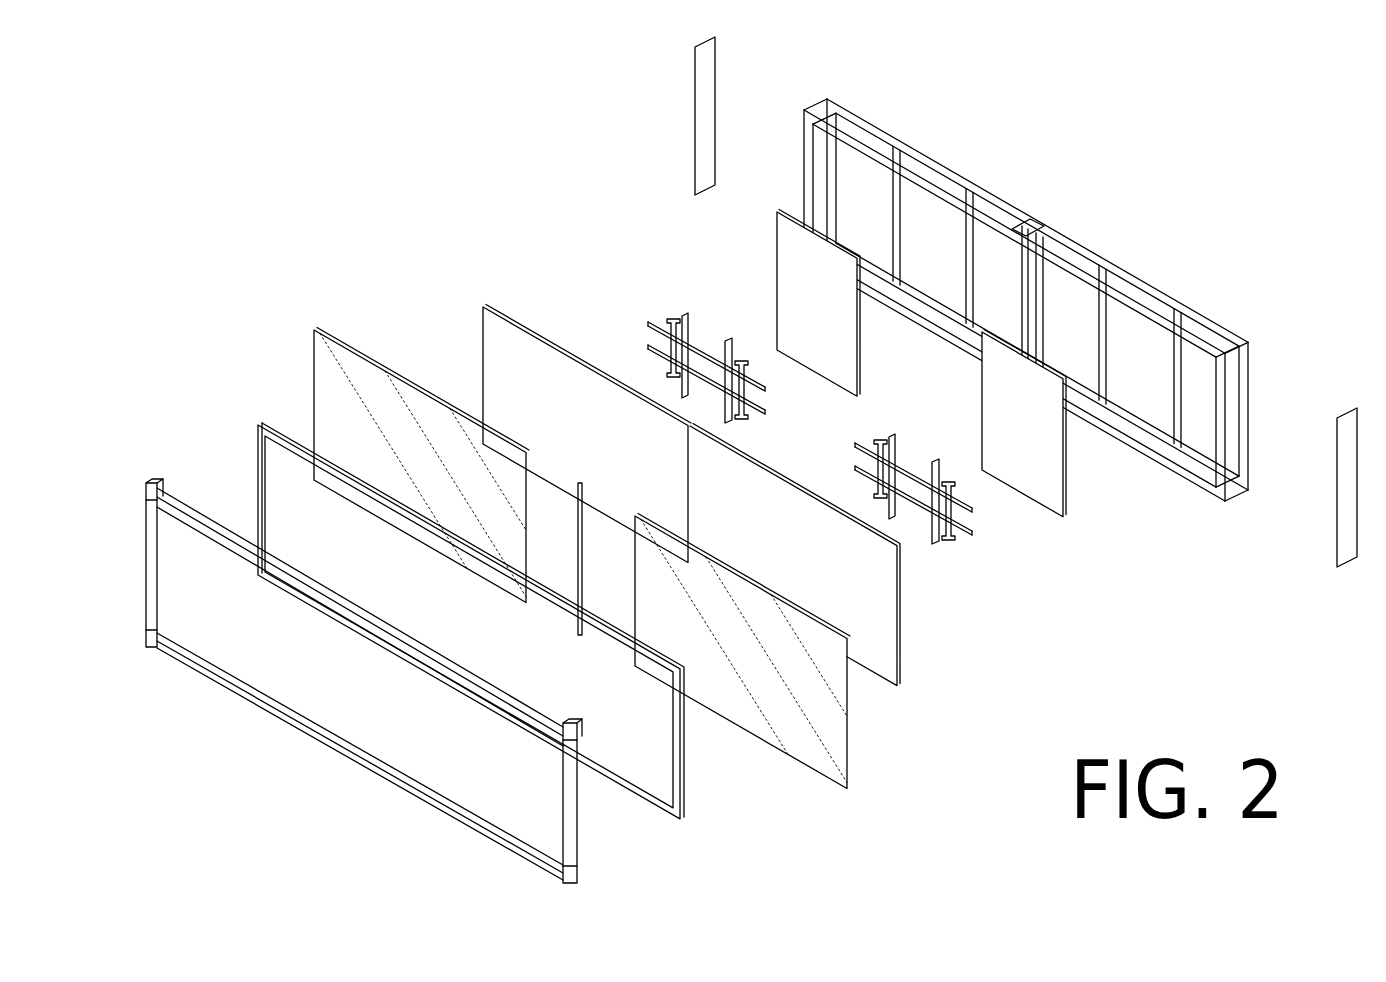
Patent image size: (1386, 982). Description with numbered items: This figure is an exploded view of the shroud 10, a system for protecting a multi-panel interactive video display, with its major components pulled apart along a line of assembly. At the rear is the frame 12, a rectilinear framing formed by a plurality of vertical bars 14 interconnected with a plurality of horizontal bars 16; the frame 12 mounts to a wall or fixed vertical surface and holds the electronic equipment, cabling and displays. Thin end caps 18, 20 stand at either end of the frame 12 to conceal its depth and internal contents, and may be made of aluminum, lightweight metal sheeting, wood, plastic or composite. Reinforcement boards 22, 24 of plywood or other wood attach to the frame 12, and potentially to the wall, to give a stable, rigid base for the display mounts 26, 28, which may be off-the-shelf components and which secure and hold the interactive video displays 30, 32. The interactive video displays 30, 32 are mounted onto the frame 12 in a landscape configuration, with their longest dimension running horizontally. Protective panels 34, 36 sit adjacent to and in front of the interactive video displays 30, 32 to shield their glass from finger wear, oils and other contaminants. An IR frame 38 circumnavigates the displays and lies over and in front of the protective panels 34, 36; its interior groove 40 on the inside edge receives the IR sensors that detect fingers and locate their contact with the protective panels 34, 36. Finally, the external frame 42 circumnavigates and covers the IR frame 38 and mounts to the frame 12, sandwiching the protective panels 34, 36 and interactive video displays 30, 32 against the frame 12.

The shroud 10 is at (440, 140).
The frame 12 is at (1013, 274).
The vertical bars 14 is at (898, 236).
The horizontal bars 16 is at (863, 121).
The end cap 18 is at (695, 104).
The end cap 20 is at (1337, 477).
The reinforcement board 22 is at (776, 268).
The reinforcement board 24 is at (982, 404).
The display mount 26 is at (878, 437).
The display mount 28 is at (668, 318).
The interactive video display 30 is at (507, 368).
The interactive video display 32 is at (867, 577).
The protective panel 34 is at (328, 378).
The protective panel 36 is at (823, 740).
The IR frame 38 is at (500, 621).
The interior groove 40 is at (675, 737).
The external frame 42 is at (580, 839).